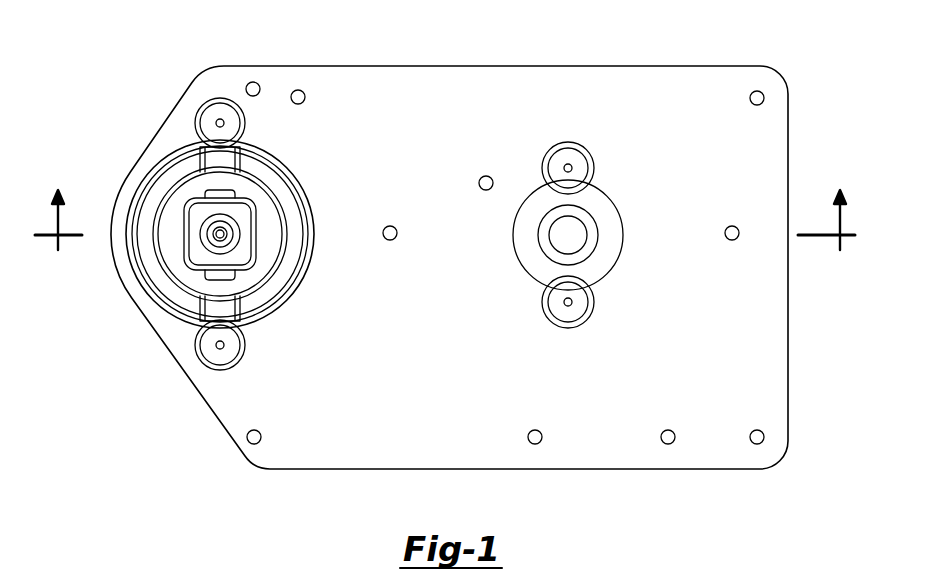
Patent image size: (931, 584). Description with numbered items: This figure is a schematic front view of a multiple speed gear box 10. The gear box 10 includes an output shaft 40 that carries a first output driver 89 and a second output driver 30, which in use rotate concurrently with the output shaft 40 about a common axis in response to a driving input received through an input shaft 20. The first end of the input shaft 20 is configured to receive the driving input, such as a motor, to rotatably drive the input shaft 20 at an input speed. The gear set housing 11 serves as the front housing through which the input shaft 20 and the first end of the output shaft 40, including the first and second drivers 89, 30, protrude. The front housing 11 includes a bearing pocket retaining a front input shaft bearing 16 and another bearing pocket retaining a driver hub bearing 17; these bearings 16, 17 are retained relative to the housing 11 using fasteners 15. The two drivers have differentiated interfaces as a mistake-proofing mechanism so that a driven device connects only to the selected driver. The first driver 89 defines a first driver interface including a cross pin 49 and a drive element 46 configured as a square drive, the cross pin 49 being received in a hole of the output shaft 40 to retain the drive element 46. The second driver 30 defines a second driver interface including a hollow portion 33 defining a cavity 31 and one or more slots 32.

The gear box 10 is at (120, 50).
The gear set housing 11 is at (788, 131).
The fasteners 15 is at (195, 117).
The front input shaft bearing 16 is at (623, 229).
The driver hub bearing 17 is at (300, 182).
The input shaft 20 is at (598, 238).
The second output driver 30 is at (313, 205).
The cavity 31 is at (257, 195).
The slots 32 is at (224, 157).
The hollow portion 33 is at (310, 237).
The output shaft 40 is at (200, 234).
The drive element 46 is at (183, 263).
The cross pin 49 is at (238, 277).
The first output driver 89 is at (268, 249).